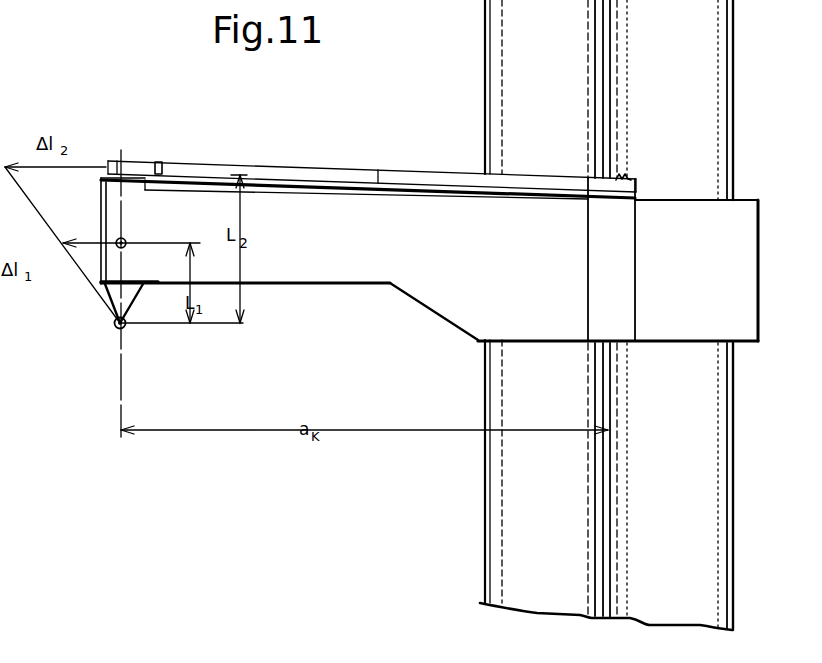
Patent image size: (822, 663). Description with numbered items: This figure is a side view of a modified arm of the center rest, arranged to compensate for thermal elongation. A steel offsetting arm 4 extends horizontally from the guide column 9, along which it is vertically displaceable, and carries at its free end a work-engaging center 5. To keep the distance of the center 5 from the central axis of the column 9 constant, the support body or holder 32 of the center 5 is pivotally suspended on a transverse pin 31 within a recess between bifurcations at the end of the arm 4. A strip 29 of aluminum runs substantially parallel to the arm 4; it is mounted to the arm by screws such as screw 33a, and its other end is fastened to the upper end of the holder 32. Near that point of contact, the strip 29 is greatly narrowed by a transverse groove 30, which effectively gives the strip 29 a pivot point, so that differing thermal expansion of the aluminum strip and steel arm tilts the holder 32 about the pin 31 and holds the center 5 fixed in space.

The offsetting arm 4 is at (375, 269).
The work-engaging center 5 is at (114, 298).
The guide column 9 is at (712, 131).
The strip 29 is at (333, 177).
The transverse groove 30 is at (159, 162).
The transverse pin 31 is at (117, 247).
The support body or holder 32 is at (110, 181).
The screw 33a is at (627, 177).